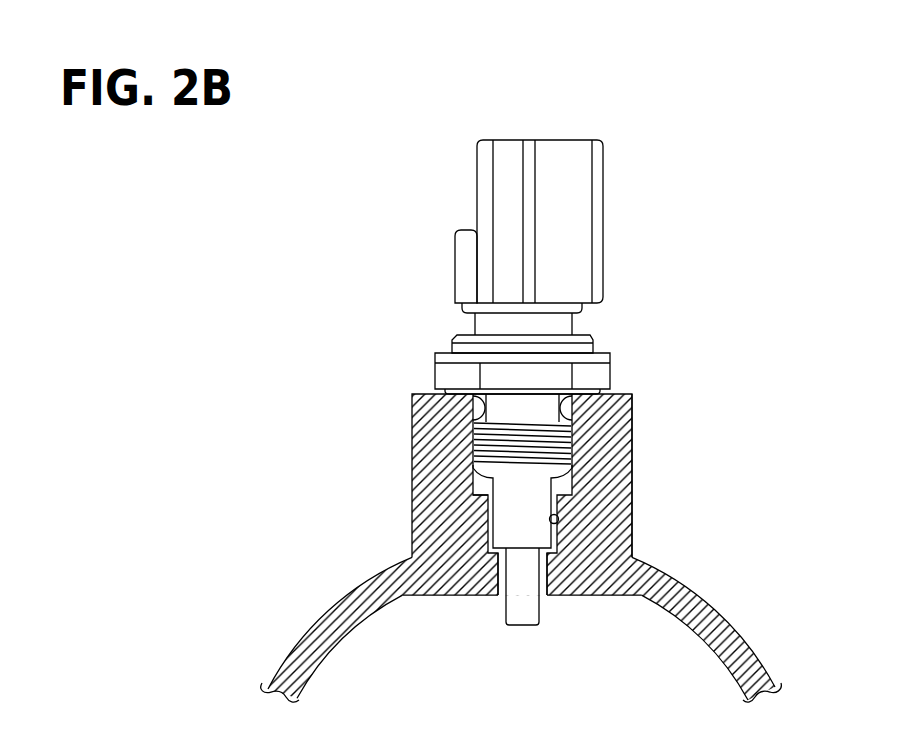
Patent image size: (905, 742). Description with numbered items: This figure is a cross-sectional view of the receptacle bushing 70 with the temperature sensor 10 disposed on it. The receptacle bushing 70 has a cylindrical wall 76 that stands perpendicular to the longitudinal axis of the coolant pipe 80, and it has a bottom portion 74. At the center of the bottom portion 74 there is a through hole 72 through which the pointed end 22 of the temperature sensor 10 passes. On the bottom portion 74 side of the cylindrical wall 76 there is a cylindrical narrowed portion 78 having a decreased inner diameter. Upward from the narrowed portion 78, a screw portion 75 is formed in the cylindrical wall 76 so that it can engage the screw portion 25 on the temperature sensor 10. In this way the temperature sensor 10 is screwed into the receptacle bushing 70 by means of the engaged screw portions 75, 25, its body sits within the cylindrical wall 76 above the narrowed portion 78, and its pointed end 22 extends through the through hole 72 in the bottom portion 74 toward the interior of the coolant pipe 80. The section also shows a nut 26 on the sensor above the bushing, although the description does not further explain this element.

The temperature sensor 10 is at (451, 197).
The pointed end 22 is at (539, 607).
The screw portion 25 is at (478, 408).
The nut portion 26 is at (612, 370).
The receptacle bushing 70 is at (399, 436).
The through hole 72 is at (506, 585).
The bottom portion 74 is at (488, 527).
The screw portion 75 is at (574, 452).
The cylindrical wall 76 is at (634, 420).
The cylindrical narrowed portion 78 is at (558, 520).
The coolant pipe 80 is at (760, 659).